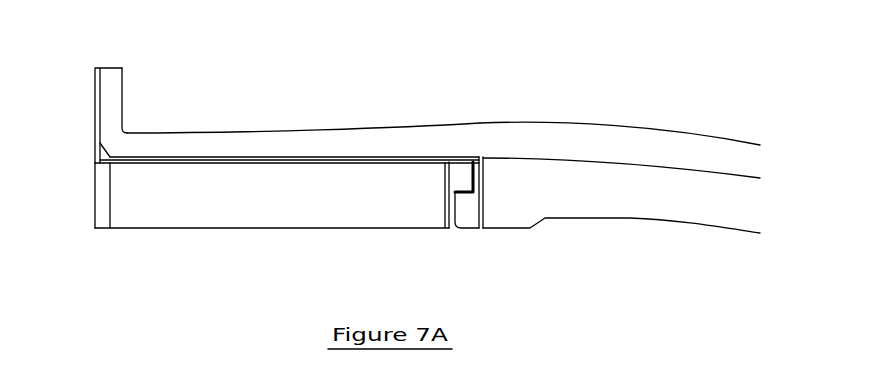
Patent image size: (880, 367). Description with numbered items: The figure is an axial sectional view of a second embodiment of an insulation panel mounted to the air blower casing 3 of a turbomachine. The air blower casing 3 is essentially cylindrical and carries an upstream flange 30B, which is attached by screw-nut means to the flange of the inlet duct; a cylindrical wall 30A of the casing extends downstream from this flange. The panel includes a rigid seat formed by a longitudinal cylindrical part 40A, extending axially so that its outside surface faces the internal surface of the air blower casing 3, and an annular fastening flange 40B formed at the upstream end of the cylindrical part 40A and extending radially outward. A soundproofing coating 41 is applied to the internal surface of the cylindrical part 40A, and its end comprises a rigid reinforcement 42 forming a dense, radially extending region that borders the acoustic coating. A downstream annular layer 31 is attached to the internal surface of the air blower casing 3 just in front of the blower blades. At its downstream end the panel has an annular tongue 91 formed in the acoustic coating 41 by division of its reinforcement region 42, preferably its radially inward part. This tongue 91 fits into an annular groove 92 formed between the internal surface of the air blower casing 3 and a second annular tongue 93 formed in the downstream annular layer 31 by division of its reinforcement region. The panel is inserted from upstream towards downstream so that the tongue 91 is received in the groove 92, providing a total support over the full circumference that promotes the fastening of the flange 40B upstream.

The air blower casing 3 is at (633, 128).
The downstream annular layer 31 is at (568, 185).
The horizontal portion of frame member 30A is at (210, 147).
The upstream flange 30B is at (107, 90).
The longitudinal cylindrical part 40A is at (272, 157).
The annular fastening flange 40B is at (98, 105).
The soundproofing coating 41 is at (215, 195).
The rigid reinforcement 42 is at (100, 190).
The annular tongue 91 is at (453, 177).
The annular groove 92 is at (472, 176).
The annular tongue 93 is at (467, 221).